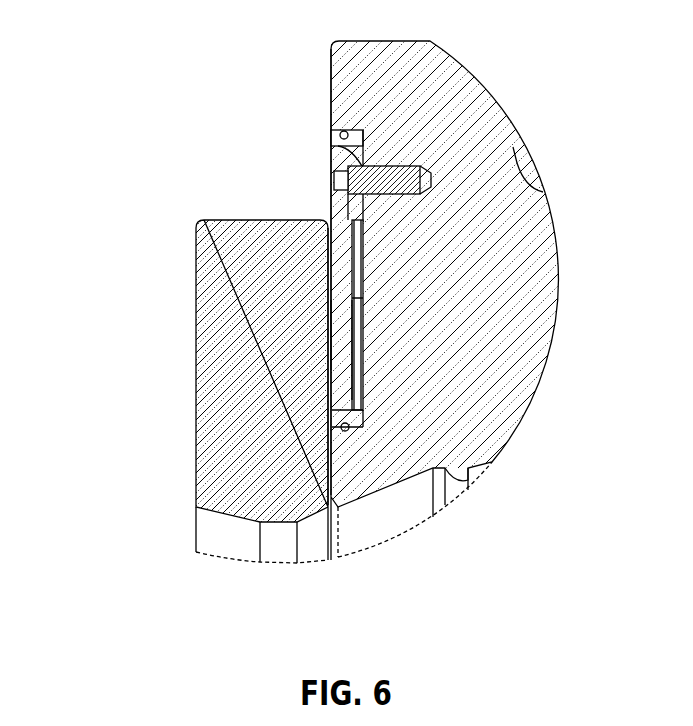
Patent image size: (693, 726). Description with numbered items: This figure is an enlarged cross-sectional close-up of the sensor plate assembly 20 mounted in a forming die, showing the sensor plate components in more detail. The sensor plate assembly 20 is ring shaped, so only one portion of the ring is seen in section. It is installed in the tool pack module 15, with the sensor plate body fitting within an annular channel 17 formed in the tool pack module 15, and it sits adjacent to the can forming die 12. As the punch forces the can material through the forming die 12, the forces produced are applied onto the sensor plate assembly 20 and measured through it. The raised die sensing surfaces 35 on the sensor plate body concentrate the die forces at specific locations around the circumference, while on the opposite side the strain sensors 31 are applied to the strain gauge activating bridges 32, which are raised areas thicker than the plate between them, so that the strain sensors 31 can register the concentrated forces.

The can forming die 12 is at (251, 315).
The tool pack module 15 is at (435, 108).
The annular channel 17 is at (379, 285).
The sensor plate assembly 20 is at (277, 145).
The strain sensors 31 is at (372, 360).
The strain gauge activating bridges 32 is at (321, 340).
The raised die sensing surfaces 35 is at (312, 285).